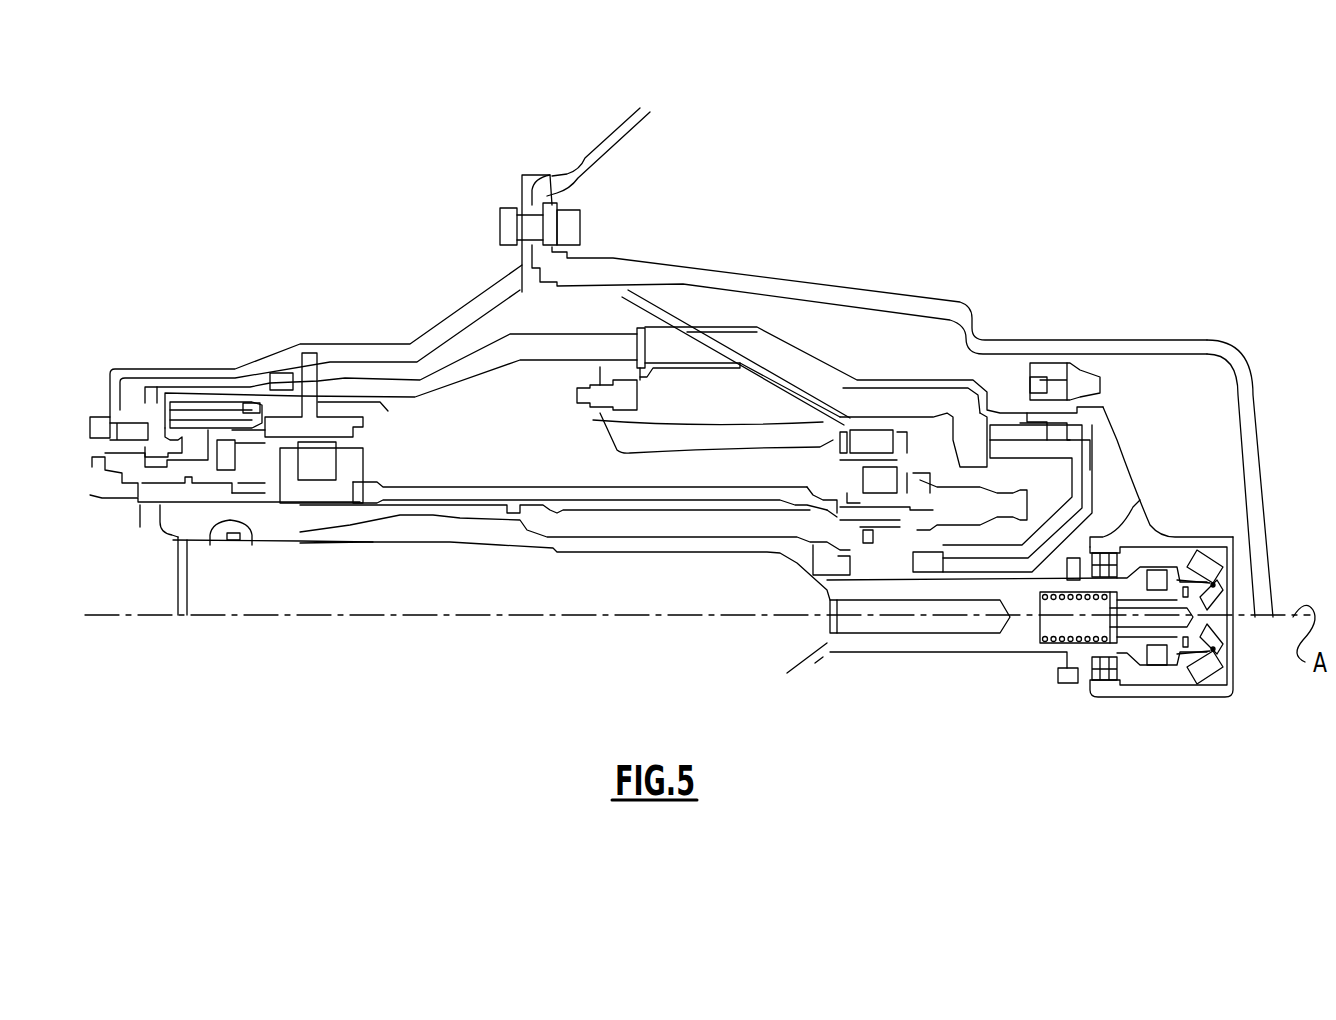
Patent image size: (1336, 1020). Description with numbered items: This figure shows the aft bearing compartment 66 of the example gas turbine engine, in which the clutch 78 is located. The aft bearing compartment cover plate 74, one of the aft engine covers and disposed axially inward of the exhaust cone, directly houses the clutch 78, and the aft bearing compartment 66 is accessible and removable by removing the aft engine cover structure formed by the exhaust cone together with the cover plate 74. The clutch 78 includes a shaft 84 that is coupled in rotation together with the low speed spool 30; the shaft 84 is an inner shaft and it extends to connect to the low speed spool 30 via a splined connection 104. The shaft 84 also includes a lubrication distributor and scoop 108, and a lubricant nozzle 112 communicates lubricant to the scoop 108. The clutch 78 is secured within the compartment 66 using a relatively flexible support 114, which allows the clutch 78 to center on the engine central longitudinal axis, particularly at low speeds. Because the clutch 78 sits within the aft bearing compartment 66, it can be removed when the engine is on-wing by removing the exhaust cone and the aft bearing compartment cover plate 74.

The low speed spool 30 is at (675, 507).
The aft bearing compartment 66 is at (1167, 380).
The aft bearing compartment cover plate 74 is at (1230, 352).
The clutch 78 is at (1233, 688).
The shaft 84 is at (1033, 650).
The splined connection 104 is at (792, 560).
The lubrication distributor and scoop 108 is at (425, 527).
The lubricant nozzle 112 is at (1090, 482).
The flexible support 114 is at (1135, 505).